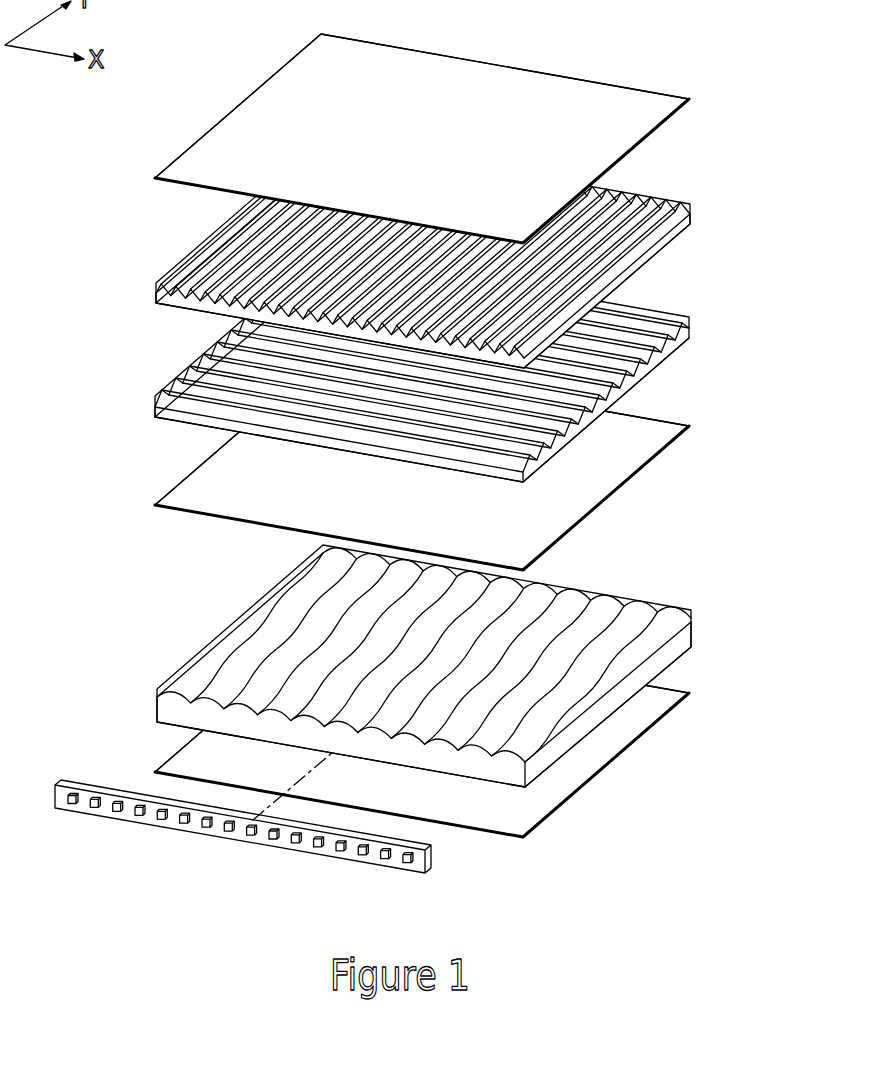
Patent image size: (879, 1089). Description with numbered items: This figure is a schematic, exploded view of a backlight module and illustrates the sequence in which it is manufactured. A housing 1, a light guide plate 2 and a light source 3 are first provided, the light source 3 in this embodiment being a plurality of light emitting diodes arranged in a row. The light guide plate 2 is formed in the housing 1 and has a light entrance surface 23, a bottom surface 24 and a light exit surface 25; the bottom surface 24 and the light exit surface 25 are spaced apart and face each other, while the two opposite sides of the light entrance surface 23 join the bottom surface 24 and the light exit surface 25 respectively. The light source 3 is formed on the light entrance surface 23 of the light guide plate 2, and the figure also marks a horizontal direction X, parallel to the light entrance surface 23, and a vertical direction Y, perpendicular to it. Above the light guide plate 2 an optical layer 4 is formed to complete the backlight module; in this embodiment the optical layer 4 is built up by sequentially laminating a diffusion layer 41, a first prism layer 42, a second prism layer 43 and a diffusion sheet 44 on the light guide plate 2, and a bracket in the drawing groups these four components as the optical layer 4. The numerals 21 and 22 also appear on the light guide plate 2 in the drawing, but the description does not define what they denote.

The housing 1 is at (187, 753).
The light guide plate 2 is at (421, 709).
The light source 3 is at (205, 828).
The optical layer 4 is at (379, 302).
The diffusion layer 41 is at (207, 470).
The first prism layer 42 is at (193, 365).
The second prism layer 43 is at (200, 264).
The diffusion sheet 44 is at (400, 138).
The light exit surface 21 is at (552, 758).
The lenticular ridge 22 is at (632, 625).
The light entrance surface 23 is at (472, 762).
The bottom surface 24 is at (667, 667).
The light exit surface 25 is at (668, 617).